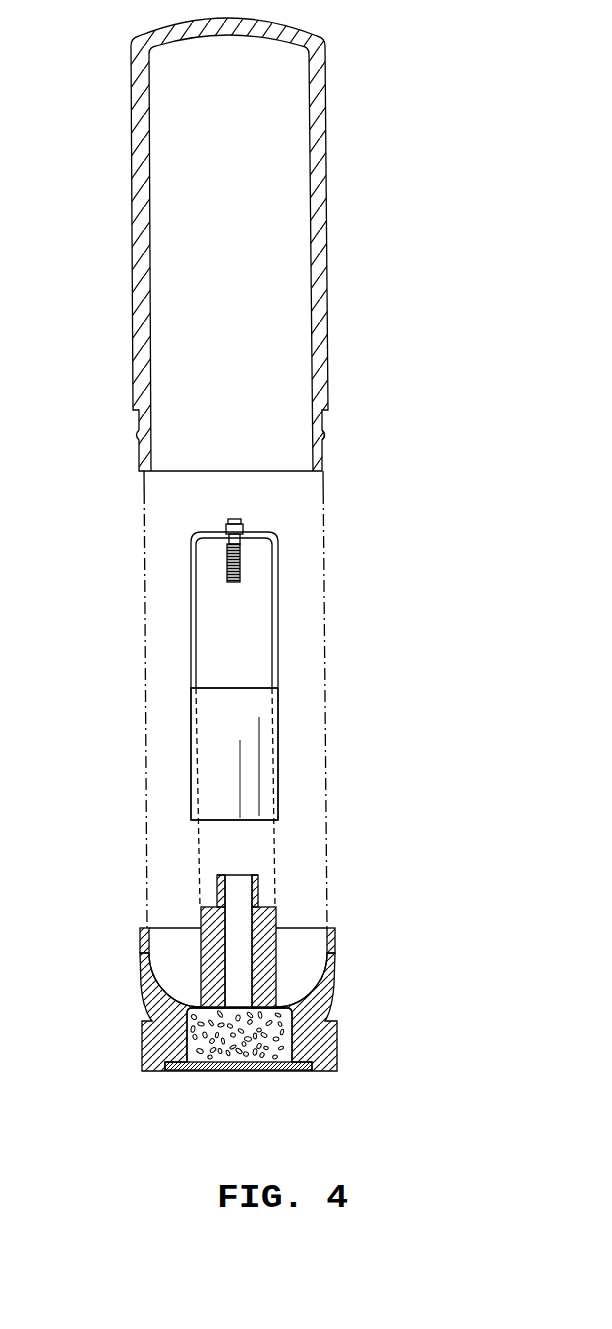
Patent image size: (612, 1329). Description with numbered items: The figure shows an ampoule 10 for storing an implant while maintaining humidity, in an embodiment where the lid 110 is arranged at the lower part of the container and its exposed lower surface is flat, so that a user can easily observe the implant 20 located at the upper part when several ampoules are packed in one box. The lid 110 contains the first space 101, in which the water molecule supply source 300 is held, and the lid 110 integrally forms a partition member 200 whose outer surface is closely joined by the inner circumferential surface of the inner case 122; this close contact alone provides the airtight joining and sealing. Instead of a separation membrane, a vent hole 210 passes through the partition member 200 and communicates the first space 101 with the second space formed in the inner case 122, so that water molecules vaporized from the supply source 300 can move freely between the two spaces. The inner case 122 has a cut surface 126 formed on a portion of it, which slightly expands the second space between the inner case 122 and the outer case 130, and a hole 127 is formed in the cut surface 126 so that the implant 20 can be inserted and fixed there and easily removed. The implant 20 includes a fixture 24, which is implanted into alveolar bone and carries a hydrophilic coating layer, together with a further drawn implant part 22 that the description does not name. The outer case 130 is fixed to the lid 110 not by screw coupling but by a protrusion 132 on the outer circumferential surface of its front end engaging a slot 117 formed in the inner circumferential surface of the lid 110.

The ampoule 10 is at (430, 521).
The implant 20 is at (250, 512).
The pump stem 22 is at (227, 557).
The fixture 24 is at (230, 519).
The first space 101 is at (195, 1072).
The lid 110 is at (323, 1033).
The slot 117 is at (140, 953).
The inner case 122 is at (260, 718).
The cut surface 126 is at (277, 637).
The hole 127 is at (270, 541).
The outer case 130 is at (326, 133).
The protrusion 132 is at (325, 432).
The partition member 200 is at (267, 942).
The vent hole 210 is at (238, 972).
The water molecule supply source 300 is at (257, 1072).